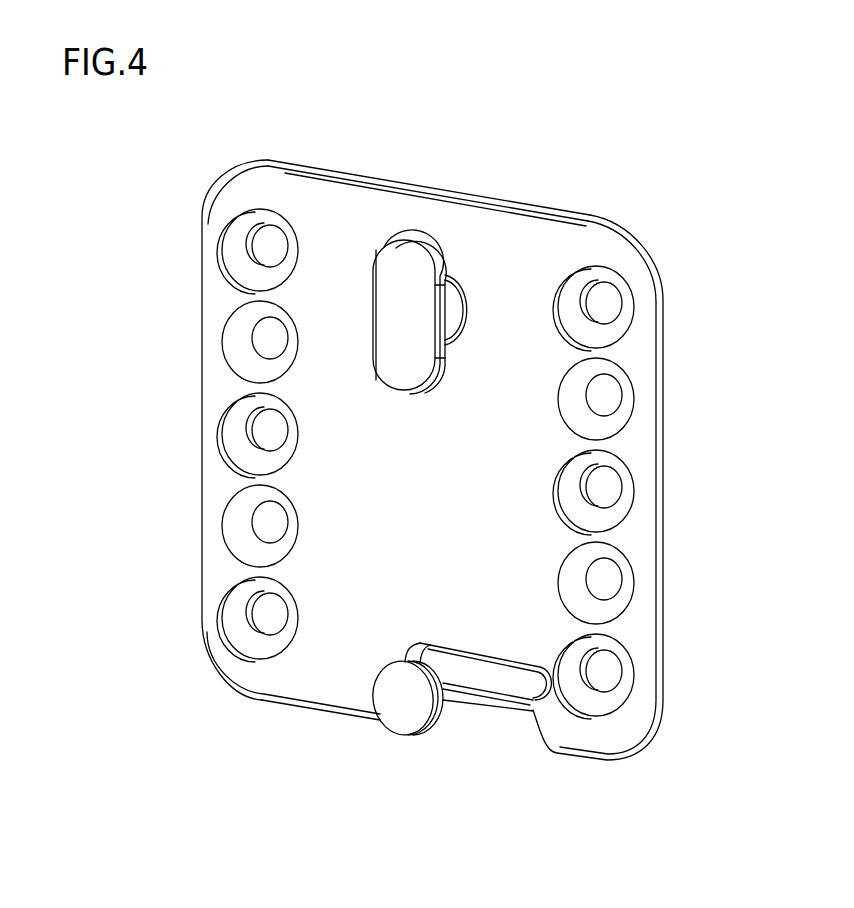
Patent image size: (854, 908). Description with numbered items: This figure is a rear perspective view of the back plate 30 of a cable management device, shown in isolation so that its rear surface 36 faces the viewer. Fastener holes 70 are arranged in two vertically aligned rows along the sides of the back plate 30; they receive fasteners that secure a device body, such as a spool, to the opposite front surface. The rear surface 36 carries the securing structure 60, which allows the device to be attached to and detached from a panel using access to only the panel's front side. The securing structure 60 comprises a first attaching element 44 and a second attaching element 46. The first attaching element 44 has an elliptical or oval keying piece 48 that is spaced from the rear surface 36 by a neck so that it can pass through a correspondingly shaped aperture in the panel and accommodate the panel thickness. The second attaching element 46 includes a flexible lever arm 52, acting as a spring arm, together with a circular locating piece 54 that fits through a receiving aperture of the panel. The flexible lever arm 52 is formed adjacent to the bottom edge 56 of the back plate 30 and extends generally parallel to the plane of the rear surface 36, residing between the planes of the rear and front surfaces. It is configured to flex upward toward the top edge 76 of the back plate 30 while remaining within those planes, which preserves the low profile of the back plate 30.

The back plate 30 is at (160, 212).
The rear surface 36 is at (402, 513).
The first attaching element 44 is at (392, 390).
The second attaching element 46 is at (453, 720).
The keying piece 48 is at (392, 329).
The flexible lever arm 52 is at (508, 708).
The locating piece 54 is at (410, 730).
The bottom edge 56 is at (302, 712).
The securing structure 60 is at (450, 232).
The fastener holes 70 is at (240, 435).
The top edge 76 is at (377, 181).